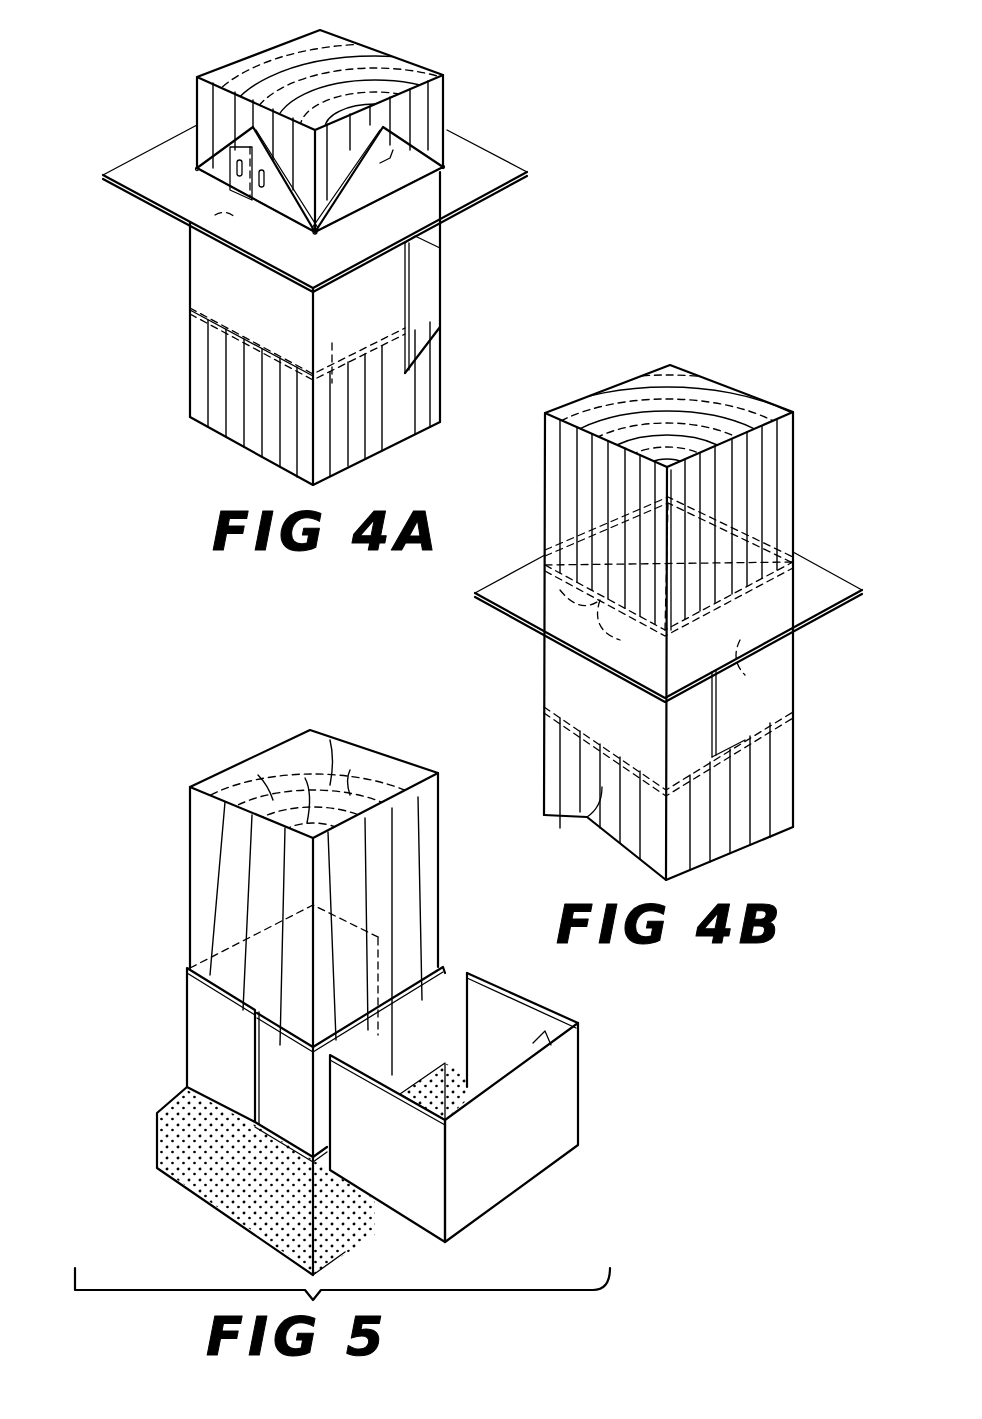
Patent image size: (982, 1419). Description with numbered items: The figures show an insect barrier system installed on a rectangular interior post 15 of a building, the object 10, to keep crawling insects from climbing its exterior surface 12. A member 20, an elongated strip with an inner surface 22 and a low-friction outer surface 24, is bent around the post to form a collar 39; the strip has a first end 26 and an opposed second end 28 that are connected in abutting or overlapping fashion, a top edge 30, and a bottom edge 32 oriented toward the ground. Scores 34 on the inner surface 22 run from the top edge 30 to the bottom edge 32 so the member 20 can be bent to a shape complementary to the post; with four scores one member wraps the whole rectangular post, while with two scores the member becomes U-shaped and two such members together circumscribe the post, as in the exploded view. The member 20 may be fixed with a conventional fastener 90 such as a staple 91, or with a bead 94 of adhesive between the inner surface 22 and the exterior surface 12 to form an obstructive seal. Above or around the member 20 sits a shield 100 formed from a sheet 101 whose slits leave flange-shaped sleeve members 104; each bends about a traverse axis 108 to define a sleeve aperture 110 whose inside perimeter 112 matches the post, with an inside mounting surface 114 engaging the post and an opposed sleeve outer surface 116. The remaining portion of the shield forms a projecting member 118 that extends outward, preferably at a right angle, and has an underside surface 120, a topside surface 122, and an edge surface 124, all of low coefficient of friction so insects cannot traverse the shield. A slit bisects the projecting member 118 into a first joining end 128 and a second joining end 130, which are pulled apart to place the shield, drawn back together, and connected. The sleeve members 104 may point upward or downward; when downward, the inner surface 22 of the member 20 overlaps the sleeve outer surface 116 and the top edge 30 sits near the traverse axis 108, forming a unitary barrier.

In FIG. 4A, the object 10 is at (200, 407).
In FIG. 4B, the object 10 is at (735, 820).
In FIG. 5, the object 10 is at (430, 858).
In FIG. 4A, the exterior surface 12 is at (423, 373).
In FIG. 4B, the exterior surface 12 is at (550, 775).
In FIG. 5, the exterior surface 12 is at (407, 890).
In FIG. 4A, the interior post 15 is at (410, 403).
In FIG. 4B, the interior post 15 is at (760, 850).
In FIG. 5, the interior post 15 is at (202, 875).
In FIG. 4A, the member 20 is at (200, 277).
In FIG. 4B, the member 20 is at (775, 768).
In FIG. 5, the member 20 is at (190, 1005).
In FIG. 5, the inner surface 22 is at (488, 997).
In FIG. 4A, the outer surface 24 is at (283, 317).
In FIG. 4B, the outer surface 24 is at (790, 733).
In FIG. 5, the outer surface 24 is at (533, 1122).
In FIG. 4A, the first end 26 is at (402, 295).
In FIG. 5, the first end 26 is at (268, 1017).
In FIG. 4A, the second end 28 is at (440, 340).
In FIG. 4B, the second end 28 is at (712, 690).
In FIG. 5, the second end 28 is at (467, 978).
In FIG. 4A, the top edge 30 is at (410, 243).
In FIG. 5, the top edge 30 is at (573, 1033).
In FIG. 4A, the bottom edge 32 is at (227, 340).
In FIG. 5, the bottom edge 32 is at (537, 1177).
In FIG. 4A, the scores 34 is at (197, 327).
In FIG. 4B, the scores 34 is at (545, 705).
In FIG. 5, the scores 34 is at (188, 972).
In FIG. 4A, the collar 39 is at (177, 448).
In FIG. 4B, the collar 39 is at (552, 687).
In FIG. 5, the collar 39 is at (192, 1040).
In FIG. 4A, the fastener 90 is at (237, 138).
In FIG. 4A, the staple 91 is at (400, 145).
In FIG. 4A, the bead of adhesive 94 is at (190, 323).
In FIG. 4B, the bead of adhesive 94 is at (773, 540).
In FIG. 5, the bead of adhesive 94 is at (283, 1058).
In FIG. 4A, the shield 100 is at (103, 180).
In FIG. 4B, the shield 100 is at (800, 565).
In FIG. 4B, the sheet 101 is at (800, 568).
In FIG. 4A, the sleeve members 104 is at (250, 120).
In FIG. 4B, the sleeve members 104 is at (605, 712).
In FIG. 4A, the traverse axis 108 is at (188, 172).
In FIG. 4B, the traverse axis 108 is at (580, 580).
In FIG. 4A, the sleeve aperture 110 is at (236, 160).
In FIG. 4B, the sleeve aperture 110 is at (550, 570).
In FIG. 4A, the inside perimeter 112 is at (262, 178).
In FIG. 4B, the inside perimeter 112 is at (543, 557).
In FIG. 4A, the inside mounting surface 114 is at (358, 145).
In FIG. 4B, the inside mounting surface 114 is at (667, 705).
In FIG. 4A, the sleeve outer surface 116 is at (378, 157).
In FIG. 4B, the sleeve outer surface 116 is at (507, 587).
In FIG. 4A, the projecting member 118 is at (485, 142).
In FIG. 4B, the projecting member 118 is at (820, 583).
In FIG. 4A, the underside surface 120 is at (475, 190).
In FIG. 4B, the underside surface 120 is at (805, 625).
In FIG. 4A, the topside surface 122 is at (530, 174).
In FIG. 4B, the topside surface 122 is at (817, 600).
In FIG. 4A, the edge surface 124 is at (512, 187).
In FIG. 4B, the edge surface 124 is at (822, 604).
In FIG. 4A, the first joining end 128 is at (225, 213).
In FIG. 4B, the first joining end 128 is at (533, 628).
In FIG. 4A, the second joining end 130 is at (222, 240).
In FIG. 4B, the second joining end 130 is at (545, 655).